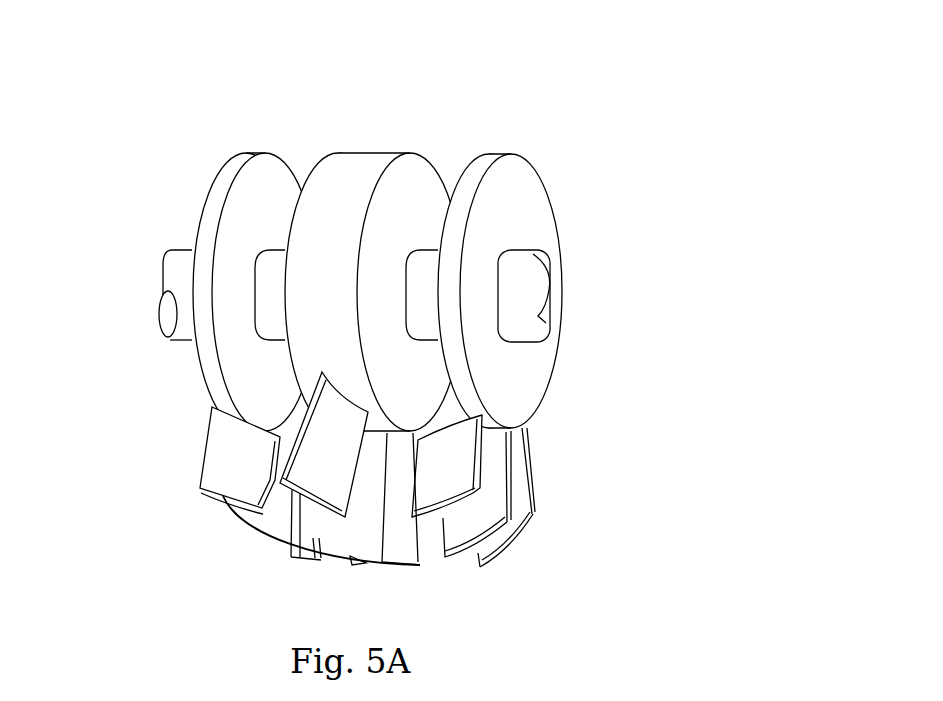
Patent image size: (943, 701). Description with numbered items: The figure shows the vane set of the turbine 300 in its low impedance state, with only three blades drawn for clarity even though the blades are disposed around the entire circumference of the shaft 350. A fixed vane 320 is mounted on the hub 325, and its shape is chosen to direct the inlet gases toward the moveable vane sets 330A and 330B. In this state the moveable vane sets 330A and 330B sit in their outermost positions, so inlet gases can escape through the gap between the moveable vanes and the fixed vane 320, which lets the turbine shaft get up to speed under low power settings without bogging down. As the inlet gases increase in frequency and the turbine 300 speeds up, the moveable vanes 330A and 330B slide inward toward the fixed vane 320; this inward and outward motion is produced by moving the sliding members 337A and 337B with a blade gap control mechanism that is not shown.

The turbine 300 is at (677, 58).
The hub 325 is at (310, 187).
The sliding member 337A is at (512, 235).
The sliding member 337B is at (207, 232).
The shaft 350 is at (528, 315).
The fixed vane 320 is at (323, 477).
The moveable vane set 330A is at (463, 437).
The moveable vane set 330B is at (217, 482).